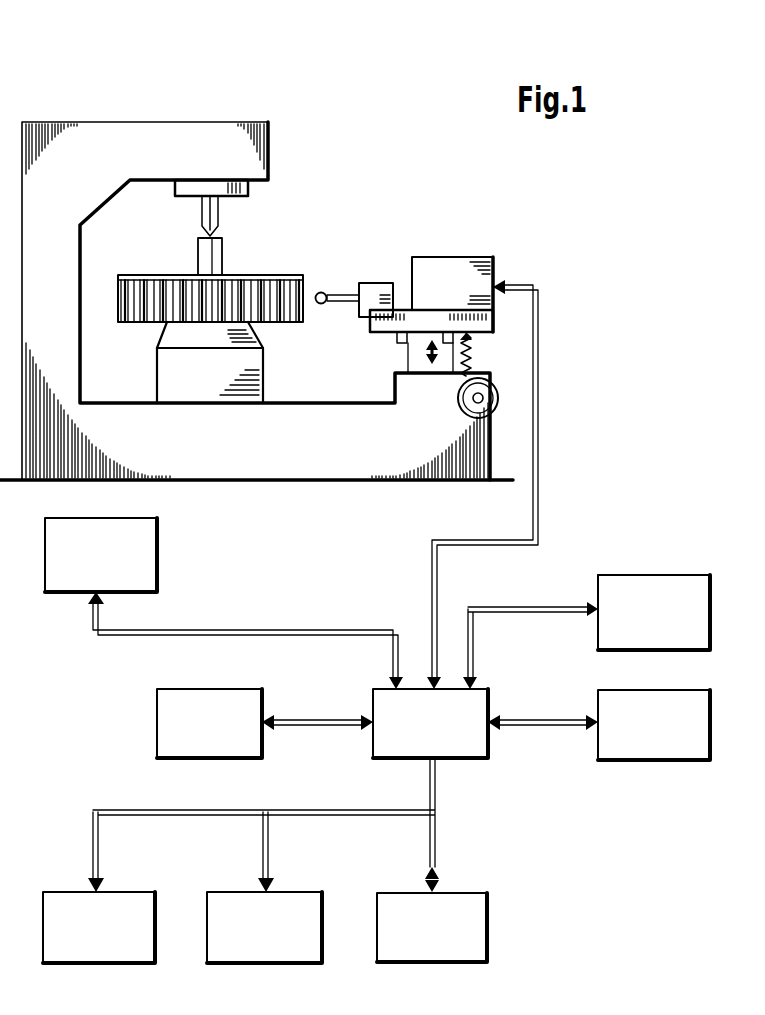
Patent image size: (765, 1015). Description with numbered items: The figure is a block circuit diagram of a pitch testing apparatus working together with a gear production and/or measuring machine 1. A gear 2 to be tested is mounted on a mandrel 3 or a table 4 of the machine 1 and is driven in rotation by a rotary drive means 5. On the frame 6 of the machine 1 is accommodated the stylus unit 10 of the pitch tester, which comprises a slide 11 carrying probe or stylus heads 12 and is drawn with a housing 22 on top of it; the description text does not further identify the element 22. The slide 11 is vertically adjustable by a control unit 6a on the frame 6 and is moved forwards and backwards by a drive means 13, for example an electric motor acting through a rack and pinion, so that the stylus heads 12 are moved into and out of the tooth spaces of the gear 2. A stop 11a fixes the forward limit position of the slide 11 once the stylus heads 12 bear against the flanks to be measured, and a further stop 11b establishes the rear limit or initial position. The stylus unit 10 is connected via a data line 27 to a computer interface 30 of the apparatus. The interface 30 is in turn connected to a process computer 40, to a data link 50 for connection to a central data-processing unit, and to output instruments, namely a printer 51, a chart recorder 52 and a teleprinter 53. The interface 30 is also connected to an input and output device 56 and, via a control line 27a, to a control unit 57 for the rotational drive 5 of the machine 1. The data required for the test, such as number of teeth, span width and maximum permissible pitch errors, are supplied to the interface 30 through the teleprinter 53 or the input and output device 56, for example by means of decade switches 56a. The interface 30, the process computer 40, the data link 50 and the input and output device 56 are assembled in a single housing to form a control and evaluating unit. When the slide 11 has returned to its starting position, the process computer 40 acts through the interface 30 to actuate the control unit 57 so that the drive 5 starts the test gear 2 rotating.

The gear production and/or measuring machine 1 is at (196, 138).
The gear 2 is at (243, 277).
The mandrel 3 is at (195, 241).
The table 4 is at (176, 339).
The rotary drive means 5 is at (210, 375).
The frame 6 is at (317, 462).
The control unit 6a is at (500, 410).
The stylus unit 10 is at (402, 279).
The slide 11 is at (388, 328).
The stop 11a is at (449, 345).
The stop 11b is at (403, 347).
The stylus heads 12 is at (323, 291).
The drive means 13 is at (469, 350).
The measuring head housing 22 is at (472, 272).
The data line 27 is at (482, 540).
The control line 27a is at (262, 630).
The computer interface 30 is at (430, 723).
The process computer 40 is at (220, 685).
The data link 50 is at (599, 725).
The printer 51 is at (99, 927).
The chart recorder 52 is at (282, 940).
The teleprinter 53 is at (436, 968).
The input and output device 56 is at (654, 612).
The decade switches 56a is at (630, 562).
The control unit 57 is at (108, 512).